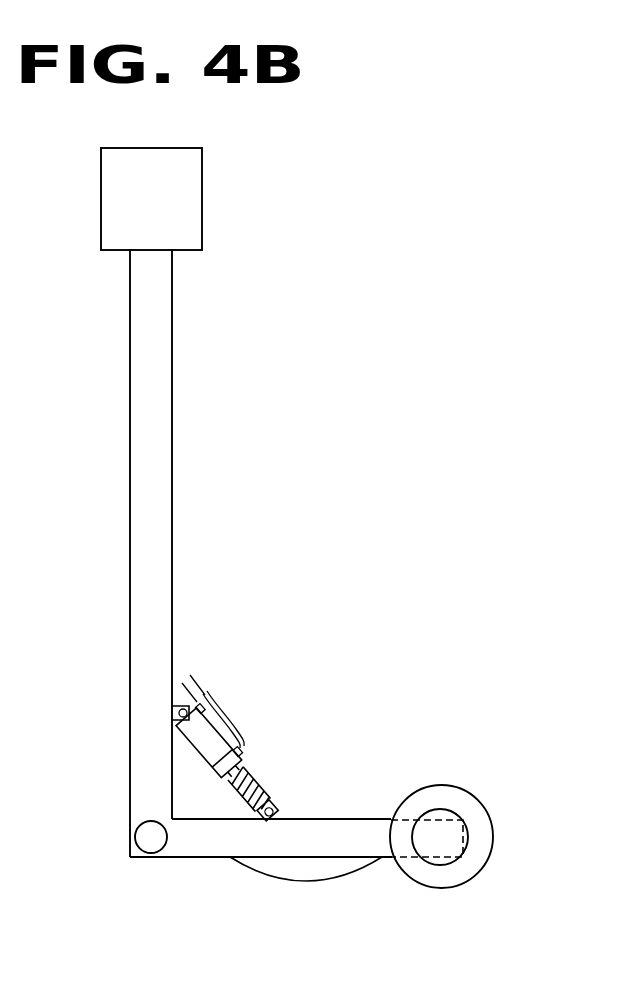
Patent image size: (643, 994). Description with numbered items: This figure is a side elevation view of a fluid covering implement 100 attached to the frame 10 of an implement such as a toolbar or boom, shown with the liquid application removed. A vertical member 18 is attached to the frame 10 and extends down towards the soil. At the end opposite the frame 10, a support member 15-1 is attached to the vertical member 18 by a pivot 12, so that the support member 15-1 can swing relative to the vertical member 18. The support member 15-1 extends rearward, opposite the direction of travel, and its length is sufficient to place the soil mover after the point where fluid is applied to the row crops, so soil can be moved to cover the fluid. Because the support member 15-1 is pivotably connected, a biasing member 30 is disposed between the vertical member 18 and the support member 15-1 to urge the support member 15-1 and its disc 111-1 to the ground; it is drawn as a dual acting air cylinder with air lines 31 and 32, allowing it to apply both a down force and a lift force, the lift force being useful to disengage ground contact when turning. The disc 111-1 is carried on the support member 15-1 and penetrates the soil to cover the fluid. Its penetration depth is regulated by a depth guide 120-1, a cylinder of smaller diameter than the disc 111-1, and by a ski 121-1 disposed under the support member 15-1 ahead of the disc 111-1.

The frame 10 is at (202, 163).
The vertical member 18 is at (130, 292).
The pivot 12 is at (148, 822).
The support member 15-1 is at (208, 857).
The biasing member 30 is at (247, 763).
The air line 31 is at (198, 686).
The air line 32 is at (213, 694).
The fluid covering implement 100 is at (472, 670).
The disc 111-1 is at (474, 793).
The depth guide 120-1 is at (468, 837).
The ski 121-1 is at (325, 882).